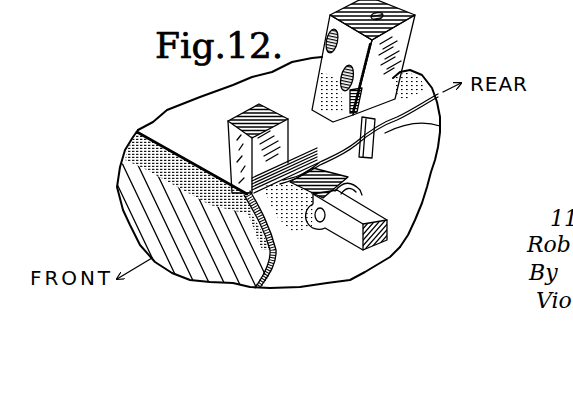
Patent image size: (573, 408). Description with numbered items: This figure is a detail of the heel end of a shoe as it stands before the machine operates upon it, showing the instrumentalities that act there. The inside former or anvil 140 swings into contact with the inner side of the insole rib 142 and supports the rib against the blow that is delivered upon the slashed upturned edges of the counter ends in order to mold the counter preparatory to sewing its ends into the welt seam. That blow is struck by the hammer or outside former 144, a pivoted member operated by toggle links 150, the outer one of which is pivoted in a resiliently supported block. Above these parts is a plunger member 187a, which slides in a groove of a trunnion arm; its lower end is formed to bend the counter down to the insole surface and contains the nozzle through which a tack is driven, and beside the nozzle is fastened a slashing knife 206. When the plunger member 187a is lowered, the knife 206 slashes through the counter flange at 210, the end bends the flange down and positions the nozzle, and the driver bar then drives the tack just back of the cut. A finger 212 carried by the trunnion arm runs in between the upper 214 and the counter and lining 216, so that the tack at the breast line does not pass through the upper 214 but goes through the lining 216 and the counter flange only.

The inside former or anvil 140 is at (261, 112).
The insole rib 142 is at (278, 153).
The hammer or outside former 144 is at (300, 217).
The toggle link 150 is at (362, 210).
The plunger member 187a is at (382, 50).
The slashing knife 206 is at (318, 93).
The slash in counter flange 210 is at (345, 163).
The finger 212 is at (368, 122).
The upper 214 is at (440, 126).
The lining 216 is at (417, 89).